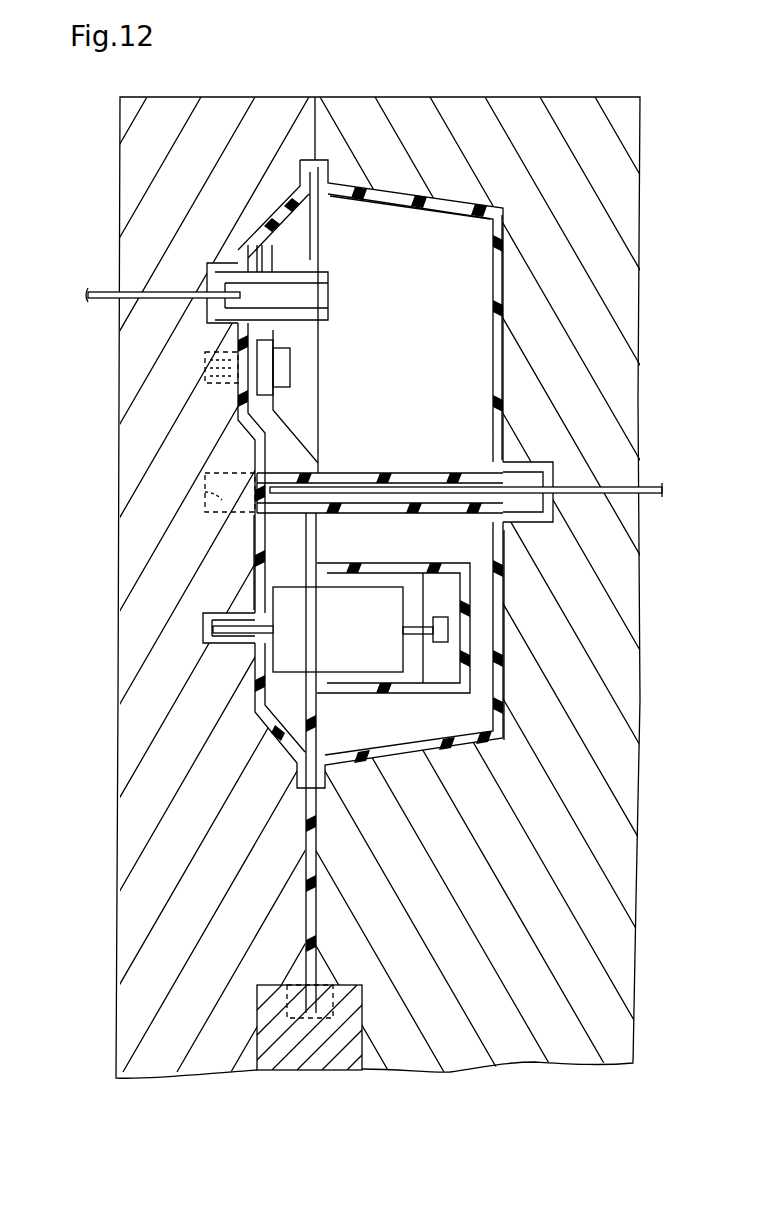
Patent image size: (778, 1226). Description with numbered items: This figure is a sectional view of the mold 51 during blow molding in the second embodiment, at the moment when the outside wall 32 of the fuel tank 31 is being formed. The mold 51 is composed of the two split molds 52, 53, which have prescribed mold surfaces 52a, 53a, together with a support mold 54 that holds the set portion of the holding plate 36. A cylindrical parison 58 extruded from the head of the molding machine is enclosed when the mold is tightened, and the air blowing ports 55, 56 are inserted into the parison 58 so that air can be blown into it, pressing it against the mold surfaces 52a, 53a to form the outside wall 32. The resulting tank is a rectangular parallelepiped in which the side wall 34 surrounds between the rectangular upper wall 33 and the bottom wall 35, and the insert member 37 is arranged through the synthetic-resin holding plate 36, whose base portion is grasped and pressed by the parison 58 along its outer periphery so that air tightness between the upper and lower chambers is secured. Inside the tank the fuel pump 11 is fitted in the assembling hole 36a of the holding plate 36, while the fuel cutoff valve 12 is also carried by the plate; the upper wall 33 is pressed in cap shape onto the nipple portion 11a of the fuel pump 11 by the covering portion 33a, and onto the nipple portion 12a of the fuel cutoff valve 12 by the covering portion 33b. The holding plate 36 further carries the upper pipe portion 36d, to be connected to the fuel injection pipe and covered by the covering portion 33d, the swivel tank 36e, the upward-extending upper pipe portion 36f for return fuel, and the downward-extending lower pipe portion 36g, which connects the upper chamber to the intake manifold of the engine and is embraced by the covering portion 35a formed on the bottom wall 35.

The fuel pump 11 is at (352, 605).
The nipple portion 11a is at (213, 628).
The fuel cutoff valve 12 is at (288, 368).
The nipple portion 12a is at (205, 372).
The fuel tank 31 is at (462, 188).
The outside wall 32 is at (672, 683).
The upper wall 33 is at (500, 752).
The covering portion 33a is at (230, 640).
The covering portion 33b is at (223, 352).
The covering portion 33d is at (220, 262).
The side wall 34 is at (277, 740).
The bottom wall 35 is at (498, 718).
The covering portion 35a is at (515, 458).
The holding plate 36 is at (300, 445).
The assembling hole 36a is at (300, 605).
The upper pipe portion 36d is at (213, 282).
The swivel tank 36e is at (380, 575).
The upper pipe portion 36f is at (205, 492).
The lower pipe portion 36g is at (525, 477).
The insert member 37 is at (470, 362).
The mold 51 is at (417, 56).
The split mold 52 is at (275, 113).
The mold surface 52a is at (256, 545).
The split mold 53 is at (368, 118).
The mold surface 53a is at (500, 600).
The support mold 54 is at (316, 1068).
The air blowing port 55 is at (88, 300).
The air blowing port 56 is at (650, 495).
The parison 58 is at (497, 300).